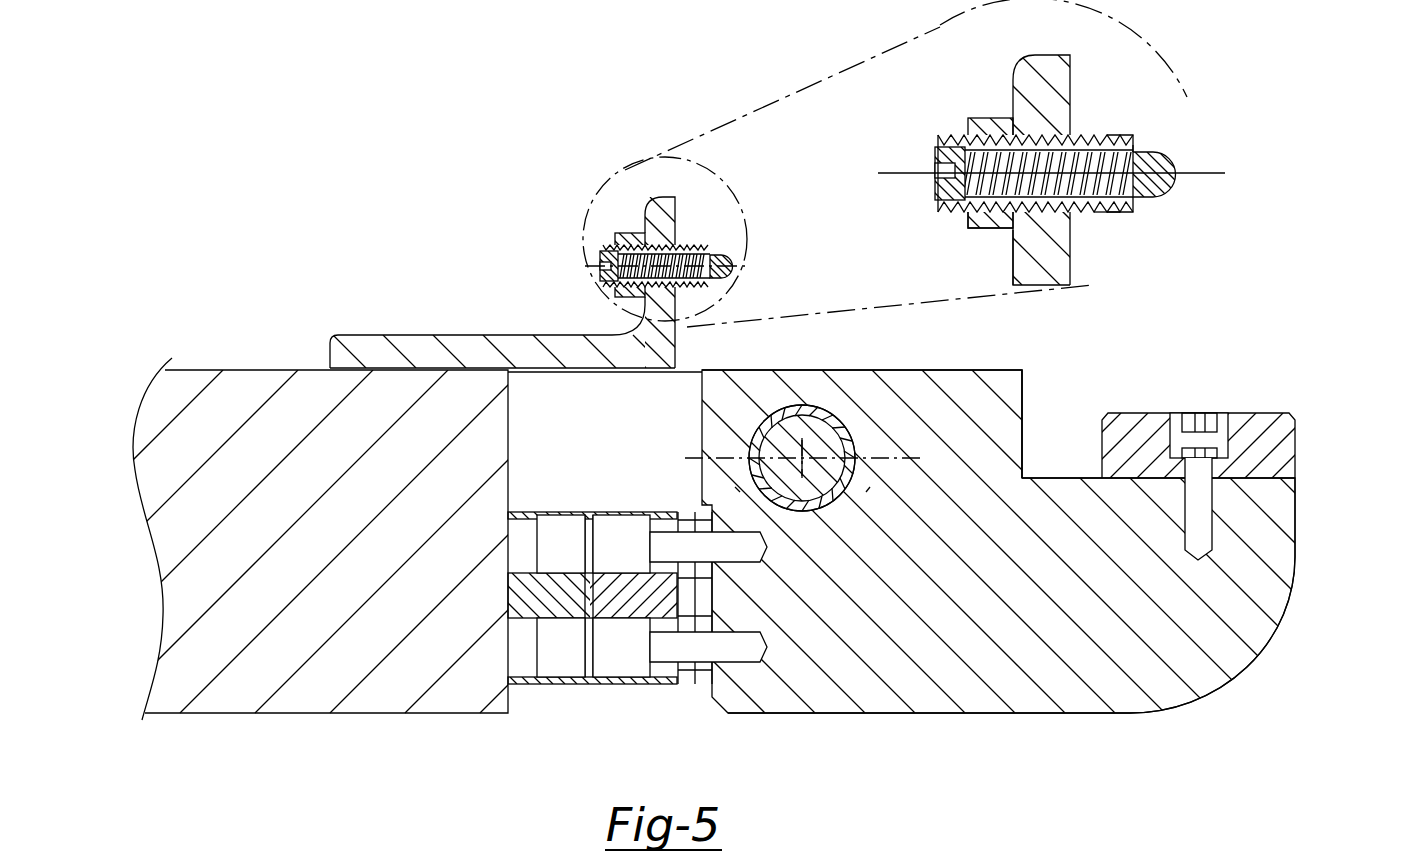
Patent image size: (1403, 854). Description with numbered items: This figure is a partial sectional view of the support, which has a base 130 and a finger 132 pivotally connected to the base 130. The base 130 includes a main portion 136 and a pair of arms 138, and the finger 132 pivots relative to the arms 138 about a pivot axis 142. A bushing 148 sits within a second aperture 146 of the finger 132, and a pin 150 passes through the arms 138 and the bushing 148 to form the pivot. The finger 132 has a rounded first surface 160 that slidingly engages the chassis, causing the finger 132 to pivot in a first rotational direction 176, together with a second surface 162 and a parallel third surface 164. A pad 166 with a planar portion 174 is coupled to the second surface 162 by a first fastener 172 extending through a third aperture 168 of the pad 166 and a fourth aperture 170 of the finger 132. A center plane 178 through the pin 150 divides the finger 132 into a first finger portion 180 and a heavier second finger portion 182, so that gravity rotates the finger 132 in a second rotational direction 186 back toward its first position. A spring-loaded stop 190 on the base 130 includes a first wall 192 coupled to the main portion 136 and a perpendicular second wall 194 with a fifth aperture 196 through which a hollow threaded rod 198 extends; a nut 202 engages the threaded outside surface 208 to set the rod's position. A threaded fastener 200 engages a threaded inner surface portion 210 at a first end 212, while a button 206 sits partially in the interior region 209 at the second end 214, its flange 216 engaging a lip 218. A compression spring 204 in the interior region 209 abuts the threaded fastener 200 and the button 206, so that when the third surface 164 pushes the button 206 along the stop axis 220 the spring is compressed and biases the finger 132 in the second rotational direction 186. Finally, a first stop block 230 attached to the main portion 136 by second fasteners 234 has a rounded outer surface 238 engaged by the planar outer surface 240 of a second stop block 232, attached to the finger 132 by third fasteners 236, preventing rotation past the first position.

The base 130 is at (245, 386).
The finger 132 is at (1010, 392).
The main portion 136 is at (411, 532).
The arms 138 is at (680, 380).
The pivot axis 142 is at (822, 480).
The second aperture 146 is at (840, 421).
The bushing 148 is at (773, 462).
The pin 150 is at (835, 448).
The first surface 160 is at (1088, 715).
The second surface 162 is at (1072, 478).
The third surface 164 is at (957, 371).
The pad 166 is at (1278, 432).
The third aperture 168 is at (1267, 462).
The fourth aperture 170 is at (1215, 503).
The first fastener 172 is at (1213, 440).
The planar portion 174 is at (1198, 446).
The first rotational direction 176 is at (871, 485).
The center plane 178 is at (692, 457).
The first finger portion 180 is at (862, 543).
The second finger portion 182 is at (907, 692).
The second rotational direction 186 is at (736, 487).
The spring-loaded stop 190 is at (667, 195).
The first wall 192 is at (428, 350).
The second wall 194 is at (665, 225).
The fifth aperture 196 is at (1087, 140).
The hollow threaded rod 198 is at (1040, 287).
The threaded fastener 200 is at (935, 157).
The nut 202 is at (983, 125).
The compression spring 204 is at (972, 222).
The button 206 is at (1160, 172).
The threaded outside surface 208 is at (1117, 143).
The interior region 209 is at (1077, 188).
The threaded inner surface portion 210 is at (948, 190).
The first end 212 is at (948, 143).
The second end 214 is at (1135, 147).
The flange 216 is at (1118, 205).
The lip 218 is at (1132, 193).
The stop axis 220 is at (1215, 178).
The first stop block 230 is at (580, 631).
The second stop block 232 is at (670, 670).
The second fasteners 234 is at (553, 638).
The third fasteners 236 is at (630, 557).
The rounded outer surface 238 is at (591, 612).
The planar outer surface 240 is at (592, 612).